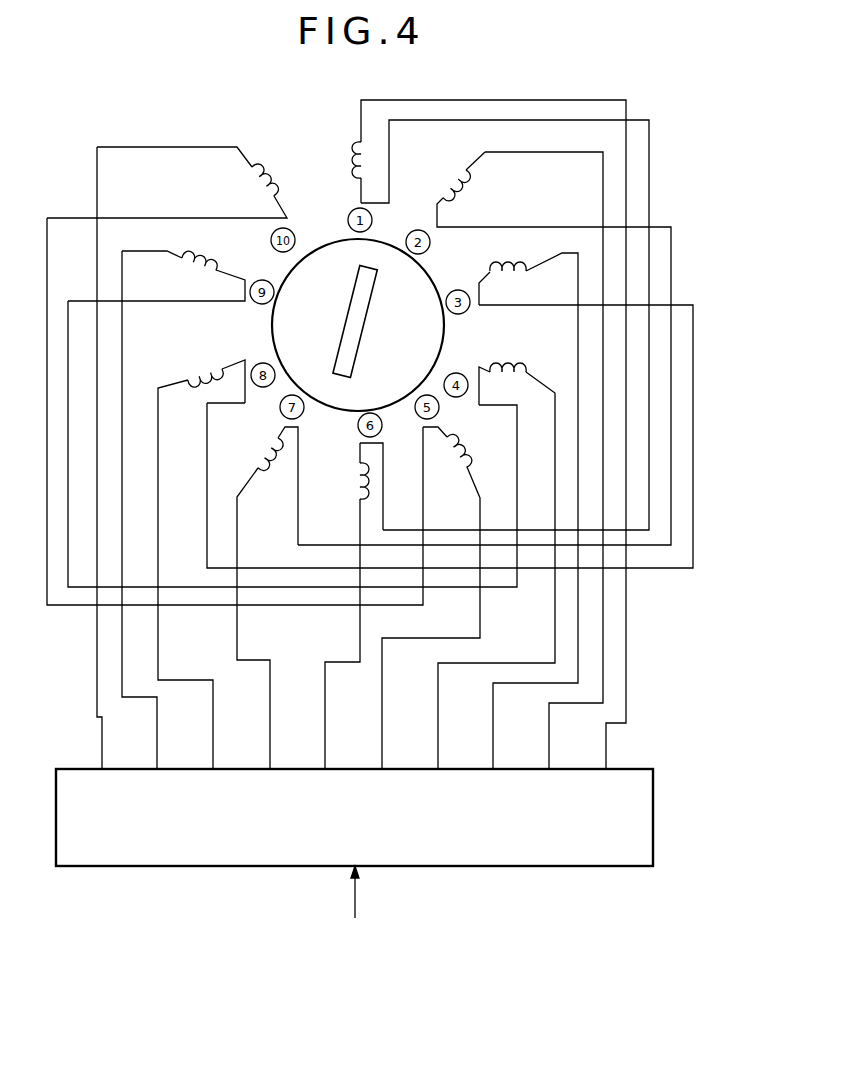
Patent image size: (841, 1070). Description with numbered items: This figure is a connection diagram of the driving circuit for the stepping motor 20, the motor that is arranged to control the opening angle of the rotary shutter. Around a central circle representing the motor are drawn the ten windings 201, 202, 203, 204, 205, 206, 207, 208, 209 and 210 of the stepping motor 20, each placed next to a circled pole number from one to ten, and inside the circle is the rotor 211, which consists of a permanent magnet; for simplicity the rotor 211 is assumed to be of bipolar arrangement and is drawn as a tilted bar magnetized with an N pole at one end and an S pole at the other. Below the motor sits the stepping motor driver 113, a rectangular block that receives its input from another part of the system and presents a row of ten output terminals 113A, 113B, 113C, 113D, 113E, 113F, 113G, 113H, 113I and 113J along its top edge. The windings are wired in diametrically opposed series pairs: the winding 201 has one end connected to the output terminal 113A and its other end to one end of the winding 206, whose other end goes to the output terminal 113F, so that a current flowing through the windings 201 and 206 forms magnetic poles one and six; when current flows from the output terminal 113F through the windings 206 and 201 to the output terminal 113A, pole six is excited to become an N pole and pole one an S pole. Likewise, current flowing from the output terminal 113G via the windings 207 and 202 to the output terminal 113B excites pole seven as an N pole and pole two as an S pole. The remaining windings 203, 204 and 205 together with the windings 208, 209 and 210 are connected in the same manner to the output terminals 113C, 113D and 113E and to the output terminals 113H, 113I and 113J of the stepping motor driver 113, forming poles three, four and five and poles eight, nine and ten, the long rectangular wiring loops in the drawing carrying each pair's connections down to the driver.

The stepping motor 20 is at (333, 234).
The winding 201 is at (356, 152).
The winding 202 is at (450, 188).
The winding 203 is at (492, 262).
The winding 204 is at (509, 368).
The winding 205 is at (455, 443).
The winding 206 is at (357, 474).
The winding 207 is at (263, 449).
The winding 208 is at (206, 364).
The winding 209 is at (212, 259).
The winding 210 is at (266, 180).
The rotor 211 is at (365, 330).
The stepping motor driver 113 is at (603, 868).
The output terminal 113A is at (635, 754).
The output terminal 113B is at (580, 754).
The output terminal 113C is at (522, 754).
The output terminal 113D is at (467, 754).
The output terminal 113E is at (412, 754).
The output terminal 113F is at (355, 754).
The output terminal 113G is at (298, 754).
The output terminal 113H is at (242, 754).
The output terminal 113I is at (185, 754).
The output terminal 113J is at (128, 754).